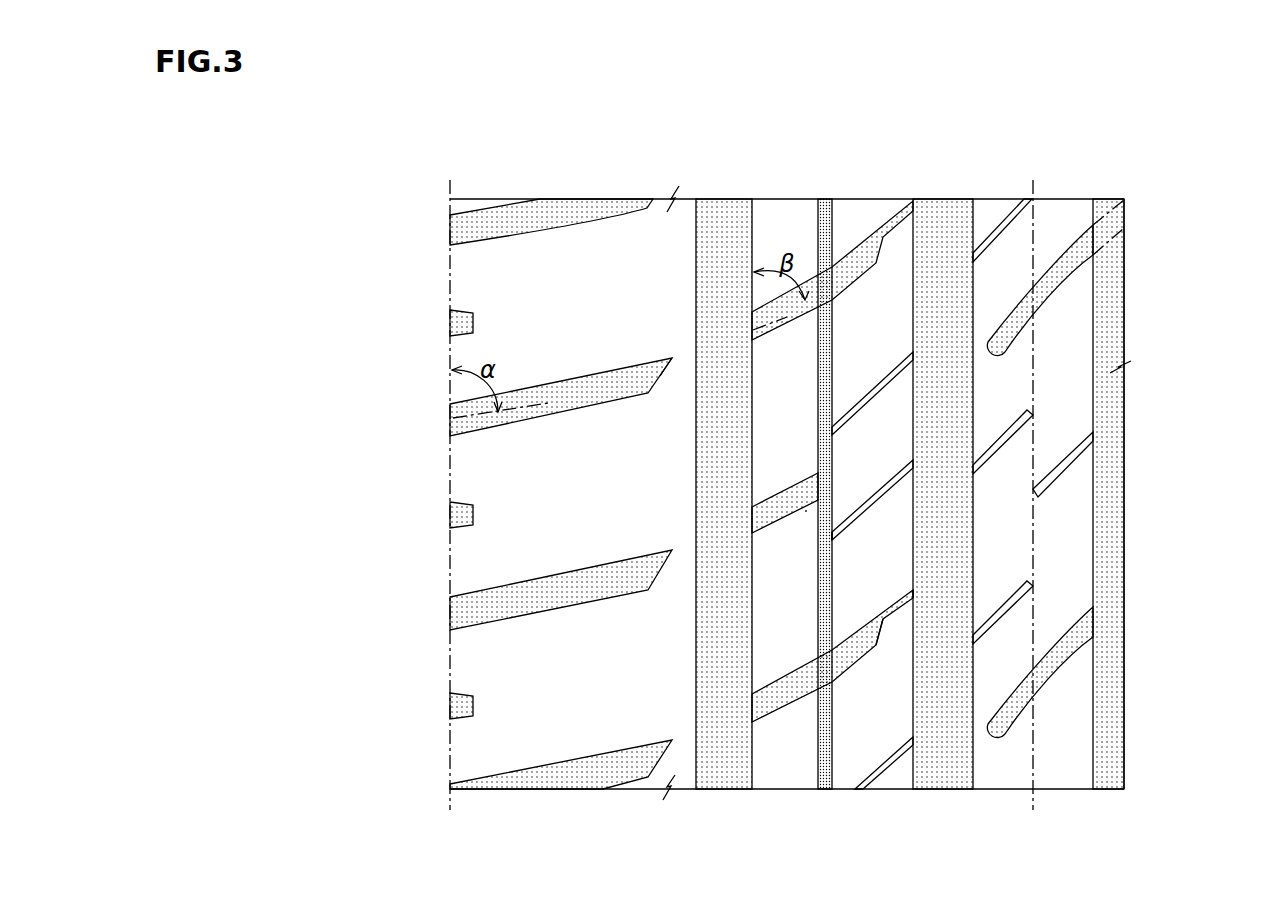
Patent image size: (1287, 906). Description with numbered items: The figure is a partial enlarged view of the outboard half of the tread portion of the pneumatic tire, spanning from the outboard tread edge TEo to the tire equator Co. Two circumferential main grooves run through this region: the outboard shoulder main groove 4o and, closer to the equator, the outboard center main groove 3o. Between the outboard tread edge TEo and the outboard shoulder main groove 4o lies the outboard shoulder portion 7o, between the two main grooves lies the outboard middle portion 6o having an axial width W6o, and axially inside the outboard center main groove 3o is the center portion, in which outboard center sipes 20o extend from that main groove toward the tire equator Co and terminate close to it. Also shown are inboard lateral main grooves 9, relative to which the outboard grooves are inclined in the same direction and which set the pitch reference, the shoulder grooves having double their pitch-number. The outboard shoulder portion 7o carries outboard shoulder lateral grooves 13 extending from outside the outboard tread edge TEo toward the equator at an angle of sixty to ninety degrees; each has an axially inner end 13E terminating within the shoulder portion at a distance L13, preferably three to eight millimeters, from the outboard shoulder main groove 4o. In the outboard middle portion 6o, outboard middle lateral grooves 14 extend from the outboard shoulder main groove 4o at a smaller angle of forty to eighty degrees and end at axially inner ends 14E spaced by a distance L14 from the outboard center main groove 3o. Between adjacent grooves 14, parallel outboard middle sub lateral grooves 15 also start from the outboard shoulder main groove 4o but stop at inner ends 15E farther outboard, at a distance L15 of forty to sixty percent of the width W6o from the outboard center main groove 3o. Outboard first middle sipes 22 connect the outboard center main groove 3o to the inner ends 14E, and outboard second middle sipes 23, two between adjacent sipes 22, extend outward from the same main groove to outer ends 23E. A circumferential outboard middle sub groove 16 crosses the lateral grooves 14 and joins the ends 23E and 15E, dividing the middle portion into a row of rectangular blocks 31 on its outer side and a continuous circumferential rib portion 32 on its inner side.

The outboard shoulder portion 7o is at (452, 186).
The outboard shoulder main groove 4o is at (723, 225).
The outboard middle portion 6o is at (755, 185).
The axial width of the outboard middle portion W6o is at (913, 199).
The outboard center main groove 3o is at (943, 225).
The outboard center sipe 20o is at (1007, 223).
The inboard lateral main groove 9 is at (1050, 290).
The outboard shoulder lateral groove 13 is at (570, 403).
The axially inner end of the outboard shoulder lateral groove 13E is at (660, 348).
The outboard middle sub lateral groove 15 is at (783, 500).
The axially inner end of the outboard middle sub lateral groove 15E is at (806, 523).
The outboard middle sub groove 16 is at (822, 716).
The block 31 is at (800, 614).
The rib portion 32 is at (903, 772).
The outboard middle lateral groove 14 is at (853, 650).
The axially inner end of the outboard middle lateral groove 14E is at (887, 620).
The outboard first middle sipe 22 is at (913, 598).
The outboard second middle sipe 23 is at (880, 505).
The axially outer end of the outboard second middle sipe 23E is at (845, 544).
The distance between inner end 13E and outboard shoulder main groove L13 is at (672, 358).
The distance between inner end 14E and outboard center main groove L14 is at (940, 584).
The distance between inner end 15E and outboard center main groove L15 is at (913, 450).
The outboard tread edge TEo is at (449, 507).
The tire equator Co is at (1032, 507).